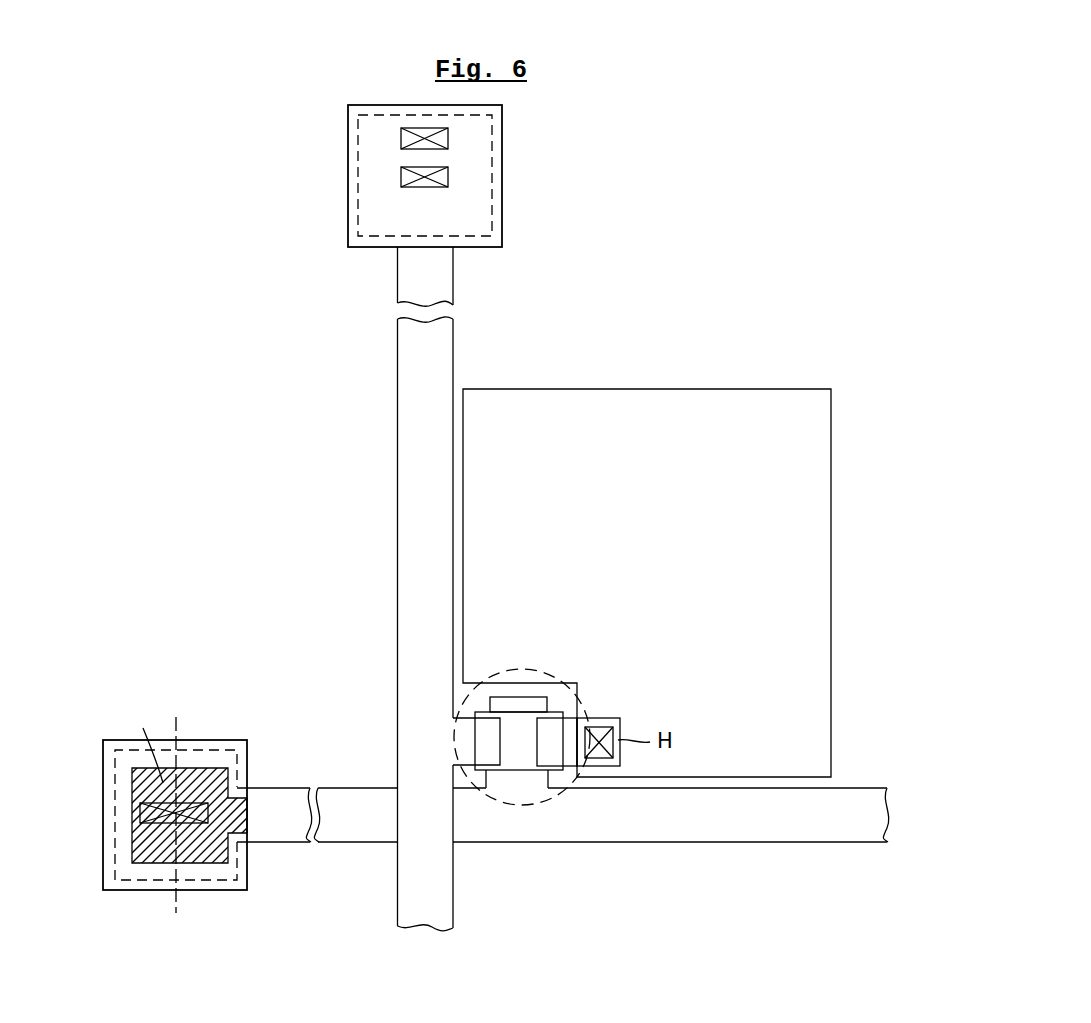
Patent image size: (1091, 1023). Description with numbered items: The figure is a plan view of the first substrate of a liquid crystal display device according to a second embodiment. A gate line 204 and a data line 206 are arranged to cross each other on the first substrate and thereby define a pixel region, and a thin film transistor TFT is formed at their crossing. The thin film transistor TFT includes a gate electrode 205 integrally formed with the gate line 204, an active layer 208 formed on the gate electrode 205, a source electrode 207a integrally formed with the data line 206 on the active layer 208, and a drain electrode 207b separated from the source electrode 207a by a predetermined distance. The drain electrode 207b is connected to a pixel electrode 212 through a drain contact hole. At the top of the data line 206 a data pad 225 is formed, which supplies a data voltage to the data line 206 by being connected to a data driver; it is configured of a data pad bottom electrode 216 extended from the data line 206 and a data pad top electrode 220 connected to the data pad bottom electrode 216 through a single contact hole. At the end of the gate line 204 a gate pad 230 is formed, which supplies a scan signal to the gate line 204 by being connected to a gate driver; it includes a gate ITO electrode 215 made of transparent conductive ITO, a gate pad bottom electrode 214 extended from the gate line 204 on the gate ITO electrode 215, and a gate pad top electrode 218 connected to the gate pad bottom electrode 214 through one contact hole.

The gate line 204 is at (728, 825).
The gate electrode 205 is at (522, 705).
The data line 206 is at (445, 358).
The source electrode 207a is at (490, 738).
The drain electrode 207b is at (552, 728).
The active layer 208 is at (524, 767).
The pixel electrode 212 is at (818, 598).
The gate pad bottom electrode 214 is at (115, 778).
The gate ITO electrode 215 is at (217, 768).
The data pad bottom electrode 216 is at (495, 183).
The gate pad top electrode 218 is at (197, 740).
The data pad top electrode 220 is at (502, 147).
The data pad 225 is at (493, 176).
The gate pad 230 is at (187, 833).
The thin film transistor TFT is at (560, 795).